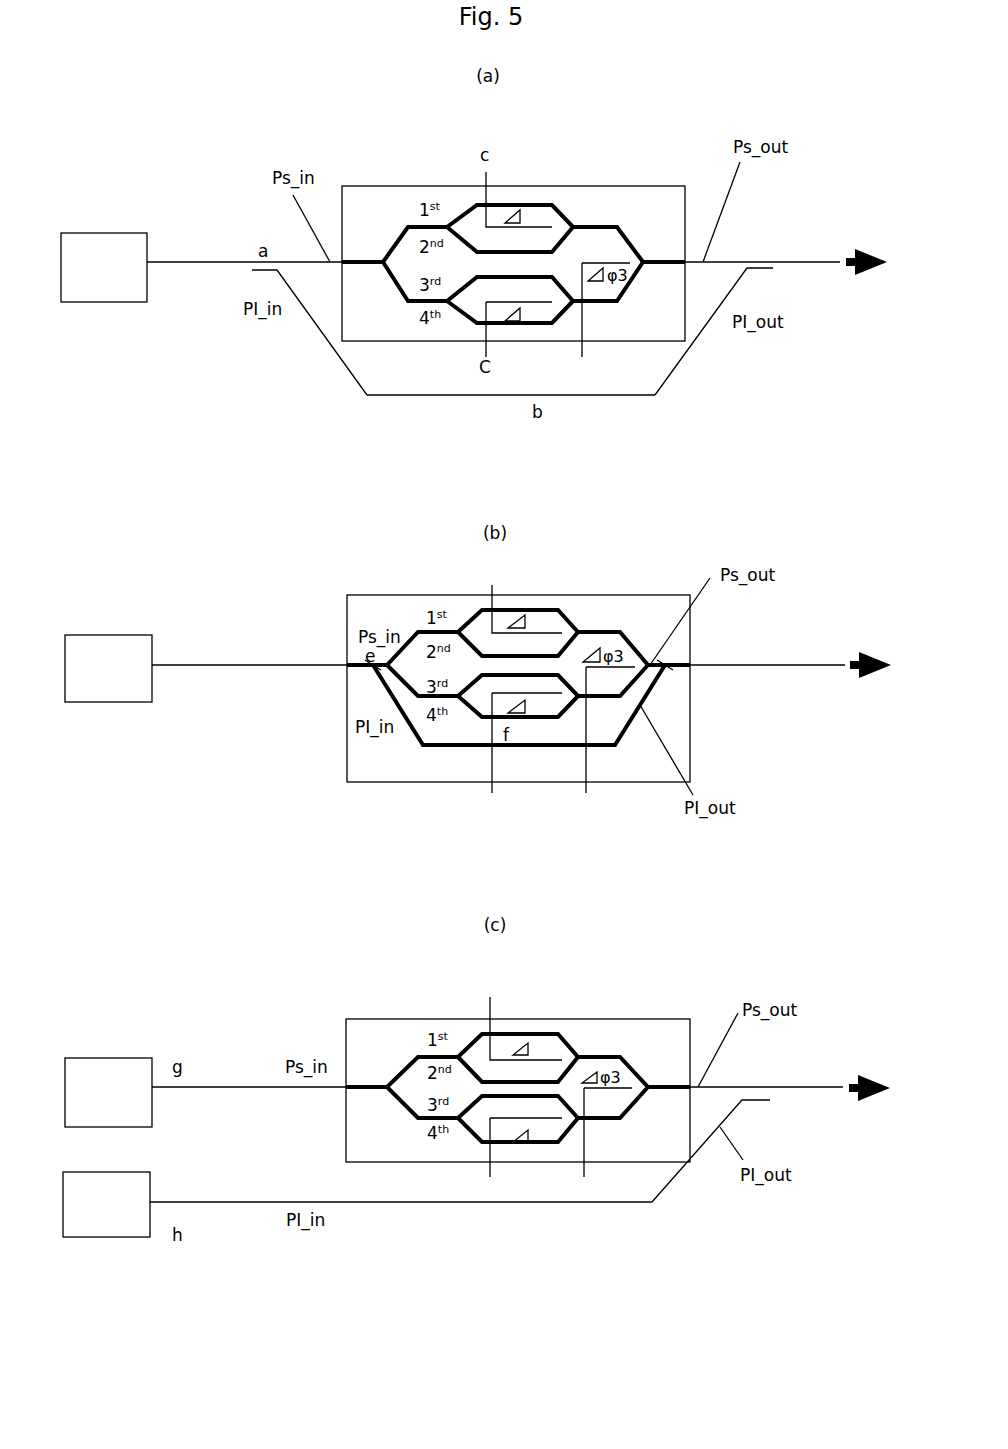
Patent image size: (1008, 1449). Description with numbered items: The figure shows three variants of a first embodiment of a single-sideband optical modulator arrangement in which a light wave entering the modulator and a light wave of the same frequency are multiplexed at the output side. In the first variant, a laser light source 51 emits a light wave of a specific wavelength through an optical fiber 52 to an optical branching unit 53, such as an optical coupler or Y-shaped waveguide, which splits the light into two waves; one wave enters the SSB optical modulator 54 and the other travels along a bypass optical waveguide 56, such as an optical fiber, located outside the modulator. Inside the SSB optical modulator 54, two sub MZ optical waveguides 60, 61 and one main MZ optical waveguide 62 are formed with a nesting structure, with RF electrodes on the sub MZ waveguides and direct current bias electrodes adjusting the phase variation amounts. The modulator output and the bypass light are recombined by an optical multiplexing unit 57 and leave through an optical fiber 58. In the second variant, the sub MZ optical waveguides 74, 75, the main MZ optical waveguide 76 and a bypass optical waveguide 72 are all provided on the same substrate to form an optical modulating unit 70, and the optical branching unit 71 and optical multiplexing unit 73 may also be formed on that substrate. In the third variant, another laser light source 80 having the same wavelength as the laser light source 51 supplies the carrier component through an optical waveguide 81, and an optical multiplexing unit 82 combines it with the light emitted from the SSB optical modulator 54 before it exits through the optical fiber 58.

The laser light source 51 is at (107, 295).
The optical fiber 52 is at (176, 262).
The optical branching unit 53 is at (250, 262).
The SSB optical modulator 54 is at (382, 186).
The bypass optical waveguide 56 is at (602, 395).
The optical multiplexing unit 57 is at (743, 262).
The optical fiber 58 is at (813, 262).
The sub MZ optical waveguide 60 is at (506, 193).
The sub MZ optical waveguide 61 is at (505, 333).
The main MZ optical waveguide 62 is at (626, 227).
The optical modulating unit 70 is at (613, 595).
The optical branching unit 71 is at (372, 668).
The bypass optical waveguide 72 is at (448, 745).
The optical multiplexing unit 73 is at (665, 665).
The sub MZ optical waveguide 74 is at (534, 600).
The sub MZ optical waveguide 75 is at (534, 725).
The main MZ optical waveguide 76 is at (611, 708).
The laser light source 80 is at (115, 1230).
The optical waveguide 81 is at (417, 1202).
The optical multiplexing unit 82 is at (767, 1100).